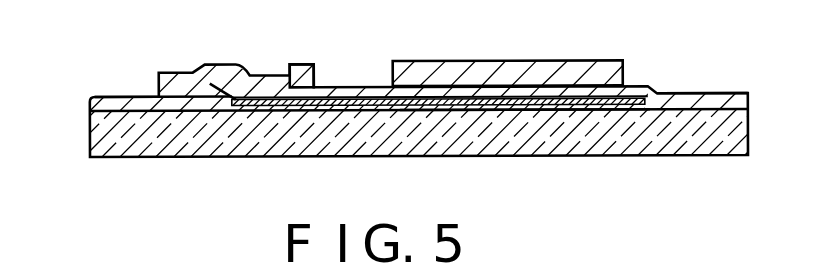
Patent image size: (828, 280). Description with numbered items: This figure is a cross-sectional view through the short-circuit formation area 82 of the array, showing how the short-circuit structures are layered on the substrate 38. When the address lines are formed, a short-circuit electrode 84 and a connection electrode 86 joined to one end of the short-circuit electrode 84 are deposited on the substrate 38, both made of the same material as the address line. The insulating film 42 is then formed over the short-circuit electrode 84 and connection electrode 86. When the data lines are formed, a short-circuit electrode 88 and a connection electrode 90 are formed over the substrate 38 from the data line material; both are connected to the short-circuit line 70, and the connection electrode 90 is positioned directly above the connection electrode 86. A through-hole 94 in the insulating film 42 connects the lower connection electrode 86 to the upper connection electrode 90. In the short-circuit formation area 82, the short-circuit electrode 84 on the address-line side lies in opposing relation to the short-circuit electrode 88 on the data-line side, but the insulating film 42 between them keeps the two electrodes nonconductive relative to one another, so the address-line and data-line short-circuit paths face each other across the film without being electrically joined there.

The substrate 38 is at (642, 140).
The insulating film 42 is at (98, 97).
The short-circuit line 70 is at (177, 87).
The short-circuit formation area 82 is at (464, 57).
The short-circuit electrode 84 is at (533, 110).
The connection electrode 86 is at (272, 100).
The short-circuit electrode 88 is at (577, 80).
The connection electrode 90 is at (265, 88).
The through-hole 94 is at (291, 78).